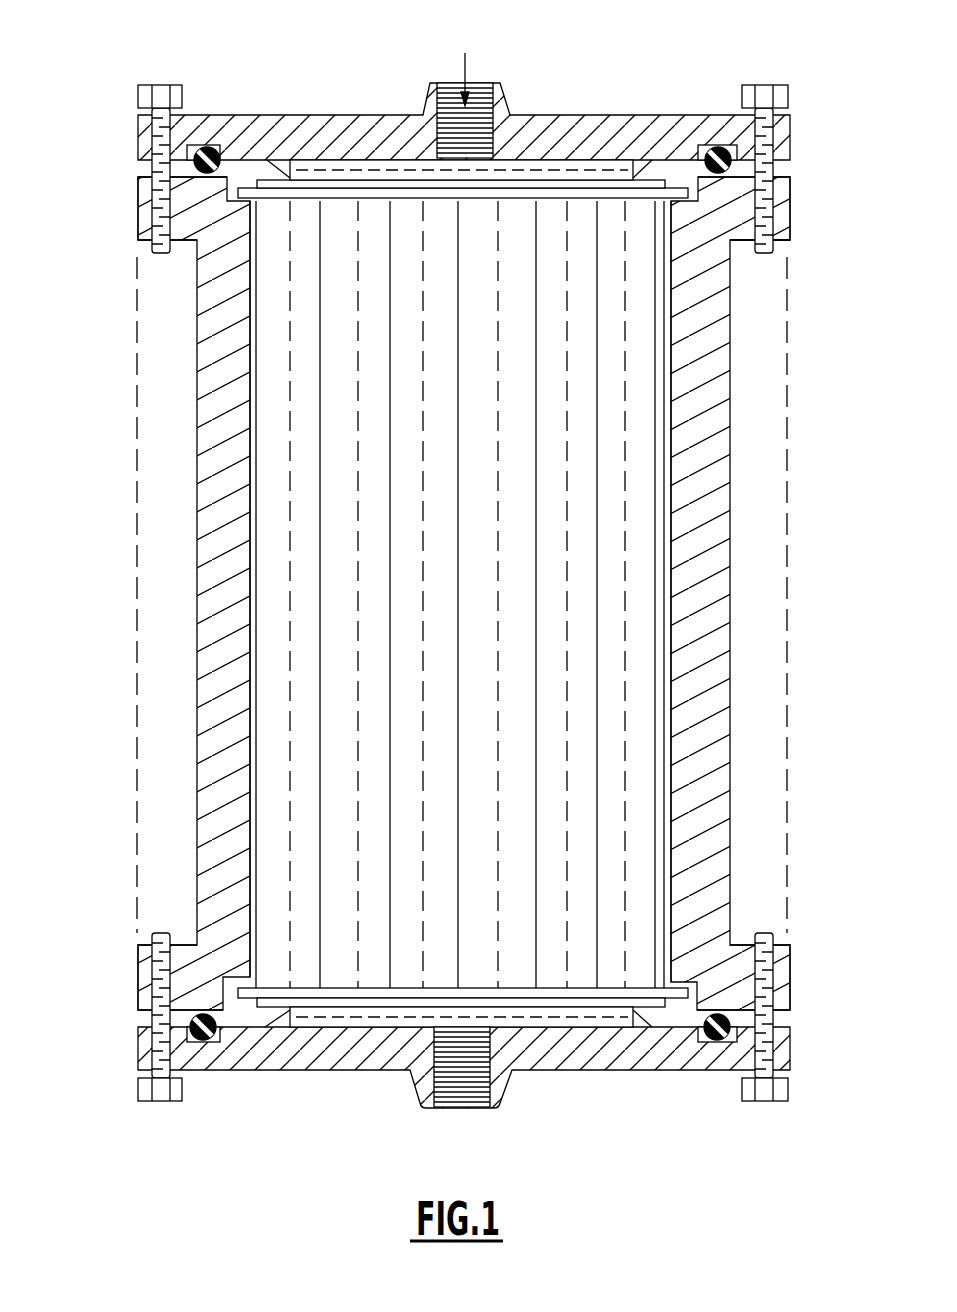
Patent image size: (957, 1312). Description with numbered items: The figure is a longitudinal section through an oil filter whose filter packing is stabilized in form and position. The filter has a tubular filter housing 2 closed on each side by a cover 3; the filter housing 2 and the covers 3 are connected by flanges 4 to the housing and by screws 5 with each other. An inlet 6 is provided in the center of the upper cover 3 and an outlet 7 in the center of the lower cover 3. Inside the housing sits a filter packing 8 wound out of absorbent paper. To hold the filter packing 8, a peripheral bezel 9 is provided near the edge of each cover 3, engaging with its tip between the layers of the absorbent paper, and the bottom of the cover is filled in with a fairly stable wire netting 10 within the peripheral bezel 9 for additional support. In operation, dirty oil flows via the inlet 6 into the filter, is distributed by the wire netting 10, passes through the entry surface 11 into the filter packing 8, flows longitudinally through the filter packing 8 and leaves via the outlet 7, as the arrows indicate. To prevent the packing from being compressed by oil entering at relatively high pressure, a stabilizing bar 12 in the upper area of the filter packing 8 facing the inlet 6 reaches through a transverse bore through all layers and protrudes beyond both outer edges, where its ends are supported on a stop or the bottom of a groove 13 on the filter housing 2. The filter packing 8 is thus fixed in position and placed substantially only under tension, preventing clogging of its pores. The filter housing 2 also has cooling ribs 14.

The filter housing 2 is at (732, 363).
The cover 3 is at (612, 115).
The flange 4 is at (138, 196).
The screw 5 is at (138, 95).
The inlet 6 is at (477, 83).
The outlet 7 is at (437, 1107).
The filter packing 8 is at (575, 565).
The peripheral bezel 9 is at (292, 176).
The wire netting 10 is at (350, 168).
The entry surface 11 is at (540, 186).
The stabilizing bar 12 is at (772, 230).
The groove 13 is at (233, 205).
The cooling ribs 14 is at (137, 433).